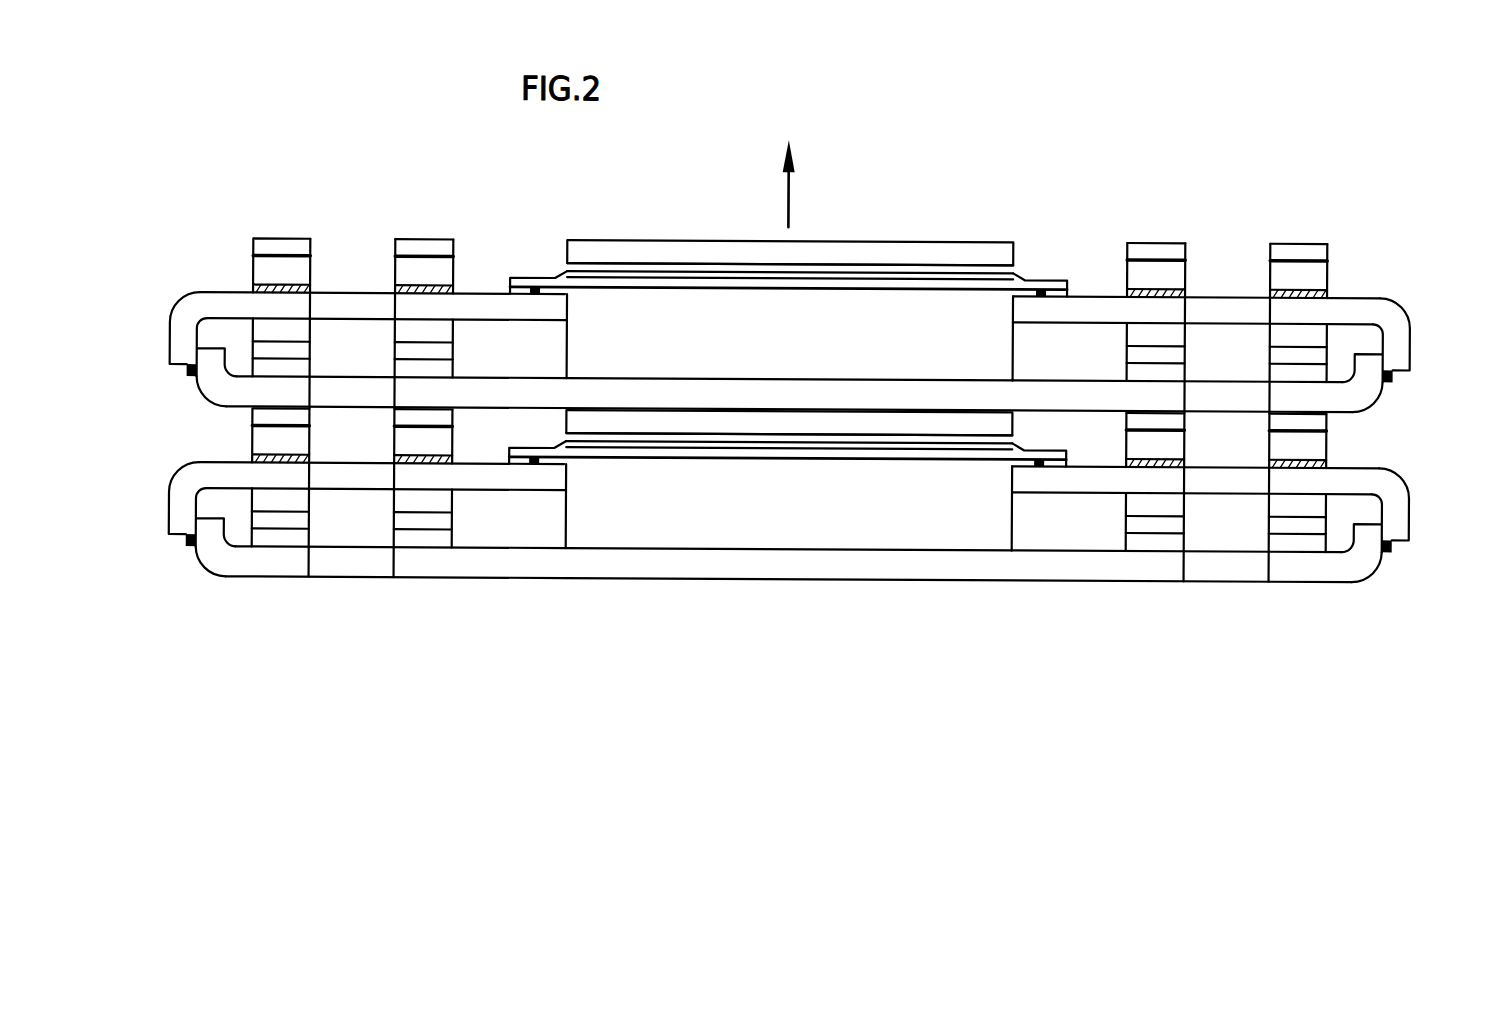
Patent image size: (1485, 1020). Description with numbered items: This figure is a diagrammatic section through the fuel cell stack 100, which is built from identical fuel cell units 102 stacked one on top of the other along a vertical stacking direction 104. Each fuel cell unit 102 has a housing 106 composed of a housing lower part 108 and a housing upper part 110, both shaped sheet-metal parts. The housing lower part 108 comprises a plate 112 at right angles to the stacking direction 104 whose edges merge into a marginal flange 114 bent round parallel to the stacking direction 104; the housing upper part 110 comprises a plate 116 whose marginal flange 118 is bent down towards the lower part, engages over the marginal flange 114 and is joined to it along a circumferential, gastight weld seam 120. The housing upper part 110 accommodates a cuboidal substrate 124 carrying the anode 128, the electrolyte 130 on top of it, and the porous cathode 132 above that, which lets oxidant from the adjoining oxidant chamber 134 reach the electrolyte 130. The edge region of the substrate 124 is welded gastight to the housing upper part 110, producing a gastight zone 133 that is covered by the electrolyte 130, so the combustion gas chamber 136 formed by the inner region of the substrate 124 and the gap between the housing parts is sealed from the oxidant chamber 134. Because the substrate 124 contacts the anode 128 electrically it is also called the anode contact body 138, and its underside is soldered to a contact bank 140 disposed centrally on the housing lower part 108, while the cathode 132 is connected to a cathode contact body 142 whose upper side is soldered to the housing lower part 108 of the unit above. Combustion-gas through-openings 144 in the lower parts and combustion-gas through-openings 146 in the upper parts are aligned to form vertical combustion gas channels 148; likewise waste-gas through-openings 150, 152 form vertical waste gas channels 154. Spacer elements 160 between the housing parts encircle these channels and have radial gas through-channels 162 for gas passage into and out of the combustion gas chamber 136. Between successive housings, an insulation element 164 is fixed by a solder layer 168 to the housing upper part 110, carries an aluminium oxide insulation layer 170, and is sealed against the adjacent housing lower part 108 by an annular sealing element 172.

The fuel cell stack 100 is at (1360, 240).
The fuel cell unit 102 is at (178, 292).
The stacking direction 104 is at (789, 196).
The housing 106 is at (231, 297).
The housing lower part 108 is at (526, 390).
The housing upper part 110 is at (486, 303).
The plate 112 is at (955, 578).
The marginal flange 114 is at (222, 496).
The plate 116 is at (1060, 490).
The marginal flange 118 is at (175, 510).
The weld seam 120 is at (185, 545).
The substrate 124 is at (971, 351).
The anode 128 is at (640, 284).
The electrolyte 130 is at (1027, 274).
The cathode 132 is at (910, 266).
The gastight zone 133 is at (1044, 452).
The oxidant chamber 134 is at (1028, 427).
The combustion gas chamber 136 is at (535, 540).
The anode contact body 138 is at (888, 351).
The contact bank 140 is at (818, 532).
The cathode contact body 142 is at (640, 252).
The combustion-gas through-openings 144 is at (312, 392).
The combustion-gas through-openings 146 is at (311, 306).
The combustion gas channels 148 is at (384, 282).
The waste-gas through-openings 150 is at (1186, 400).
The waste-gas through-openings 152 is at (1185, 312).
The waste gas channels 154 is at (1257, 284).
The spacer elements 160 is at (1133, 545).
The radial gas through-channels 162 is at (1143, 525).
The insulation element 164 is at (443, 440).
The solder layer 168 is at (400, 442).
The insulation layer 170 is at (408, 420).
The sealing element 172 is at (408, 416).